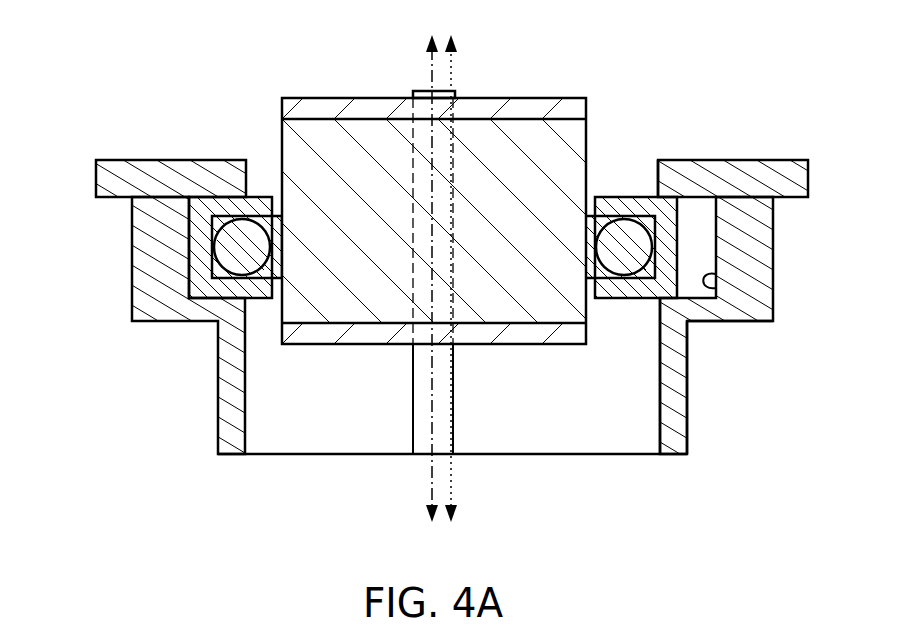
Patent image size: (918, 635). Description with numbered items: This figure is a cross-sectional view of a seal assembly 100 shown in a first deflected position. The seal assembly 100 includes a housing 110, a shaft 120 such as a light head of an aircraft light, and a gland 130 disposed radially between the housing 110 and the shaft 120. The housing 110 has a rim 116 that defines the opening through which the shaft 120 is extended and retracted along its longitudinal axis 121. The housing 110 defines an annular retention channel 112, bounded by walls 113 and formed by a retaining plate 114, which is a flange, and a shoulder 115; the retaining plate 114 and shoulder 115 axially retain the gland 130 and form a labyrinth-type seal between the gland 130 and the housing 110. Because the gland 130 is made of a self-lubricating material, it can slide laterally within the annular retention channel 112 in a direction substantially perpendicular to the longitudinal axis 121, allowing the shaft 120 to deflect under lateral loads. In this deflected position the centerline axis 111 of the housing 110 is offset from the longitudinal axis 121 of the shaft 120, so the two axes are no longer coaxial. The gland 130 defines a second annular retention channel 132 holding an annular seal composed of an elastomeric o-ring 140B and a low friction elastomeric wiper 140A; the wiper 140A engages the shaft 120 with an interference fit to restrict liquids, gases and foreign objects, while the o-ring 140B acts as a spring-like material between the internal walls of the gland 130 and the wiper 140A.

The seal assembly 100 is at (206, 38).
The housing 110 is at (767, 233).
The centerline axis 111 is at (452, 70).
The annular retention channel 112 is at (695, 240).
The walls 113 is at (720, 287).
The retaining plate 114 is at (158, 180).
The shoulder 115 is at (705, 306).
The rim 116 is at (658, 167).
The shaft 120 is at (320, 137).
The longitudinal axis 121 is at (430, 70).
The gland 130 is at (265, 200).
The second annular retention channel 132 is at (681, 300).
The elastomeric wiper 140A is at (268, 272).
The elastomeric o-ring 140B is at (237, 265).